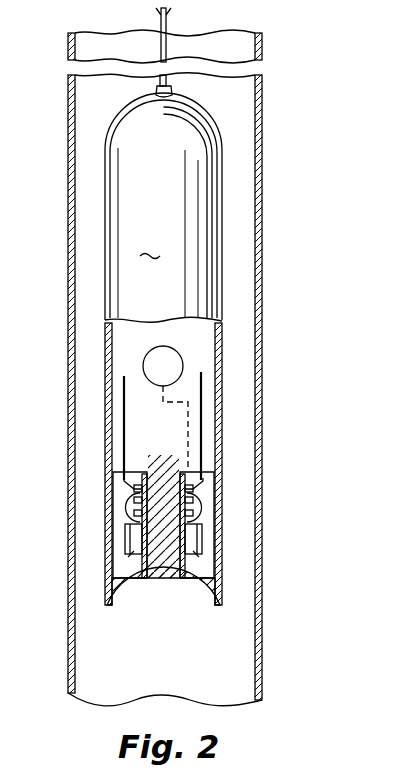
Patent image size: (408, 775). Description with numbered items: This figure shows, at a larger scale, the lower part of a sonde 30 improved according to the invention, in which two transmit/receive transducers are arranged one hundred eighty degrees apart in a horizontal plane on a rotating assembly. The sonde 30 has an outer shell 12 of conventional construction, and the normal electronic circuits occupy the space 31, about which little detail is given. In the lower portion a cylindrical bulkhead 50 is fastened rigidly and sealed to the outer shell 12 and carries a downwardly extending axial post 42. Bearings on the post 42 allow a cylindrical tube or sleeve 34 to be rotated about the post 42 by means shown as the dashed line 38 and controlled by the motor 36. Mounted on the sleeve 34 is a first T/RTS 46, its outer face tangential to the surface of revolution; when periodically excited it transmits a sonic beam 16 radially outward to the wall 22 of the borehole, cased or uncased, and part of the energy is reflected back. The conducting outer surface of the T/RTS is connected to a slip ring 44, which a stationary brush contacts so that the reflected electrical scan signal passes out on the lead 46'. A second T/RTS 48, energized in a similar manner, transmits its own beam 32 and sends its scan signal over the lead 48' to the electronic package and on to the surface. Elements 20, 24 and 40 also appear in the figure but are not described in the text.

The outer shell 12 is at (221, 140).
The sonic beam 16 is at (198, 557).
The suspension stem / cable 20 is at (170, 20).
The wall of the borehole 22 is at (262, 236).
The tubing bore 24 is at (48, 257).
The sonde 30 is at (227, 188).
The space 31 is at (152, 245).
The sonic beam 32 is at (128, 553).
The cylindrical tube or sleeve 34 is at (196, 572).
The motor 36 is at (183, 355).
The dashed line 38 is at (190, 416).
The housing 40 is at (223, 500).
The axial post 42 is at (170, 580).
The slip ring 44 is at (144, 500).
The first T/RTS 46 is at (247, 543).
The lead 46' is at (256, 426).
The second T/RTS 48 is at (85, 556).
The lead 48' is at (71, 426).
The cylindrical bulkhead 50 is at (131, 437).